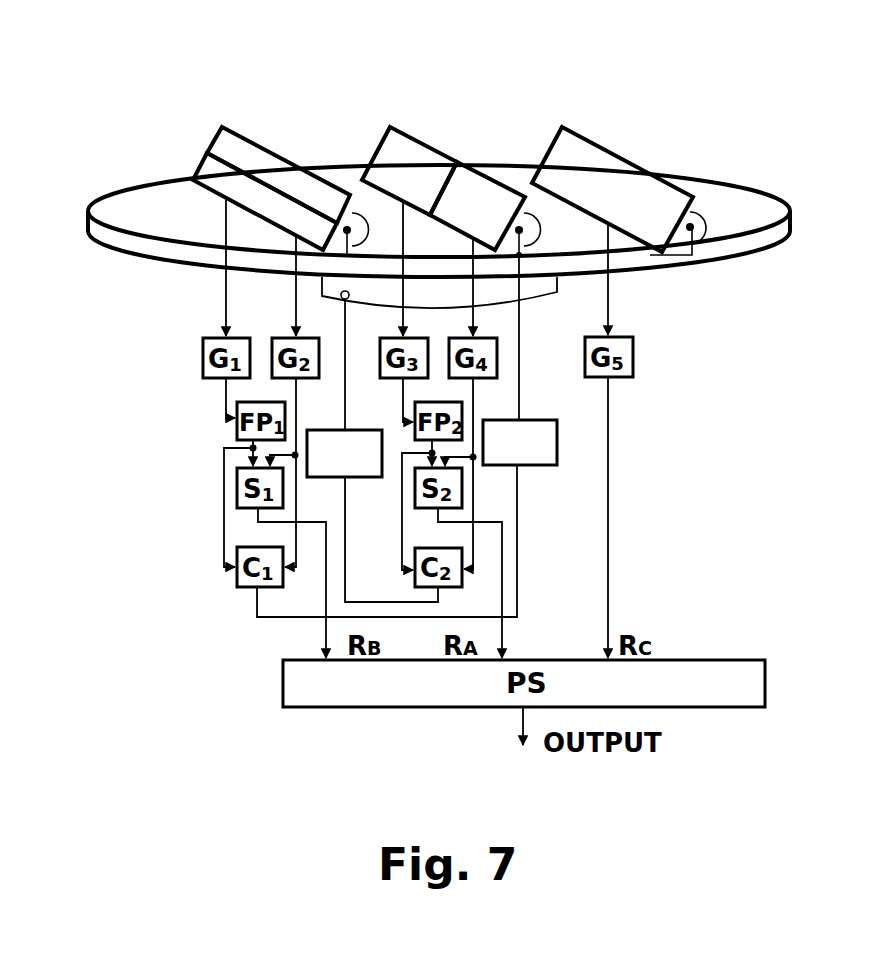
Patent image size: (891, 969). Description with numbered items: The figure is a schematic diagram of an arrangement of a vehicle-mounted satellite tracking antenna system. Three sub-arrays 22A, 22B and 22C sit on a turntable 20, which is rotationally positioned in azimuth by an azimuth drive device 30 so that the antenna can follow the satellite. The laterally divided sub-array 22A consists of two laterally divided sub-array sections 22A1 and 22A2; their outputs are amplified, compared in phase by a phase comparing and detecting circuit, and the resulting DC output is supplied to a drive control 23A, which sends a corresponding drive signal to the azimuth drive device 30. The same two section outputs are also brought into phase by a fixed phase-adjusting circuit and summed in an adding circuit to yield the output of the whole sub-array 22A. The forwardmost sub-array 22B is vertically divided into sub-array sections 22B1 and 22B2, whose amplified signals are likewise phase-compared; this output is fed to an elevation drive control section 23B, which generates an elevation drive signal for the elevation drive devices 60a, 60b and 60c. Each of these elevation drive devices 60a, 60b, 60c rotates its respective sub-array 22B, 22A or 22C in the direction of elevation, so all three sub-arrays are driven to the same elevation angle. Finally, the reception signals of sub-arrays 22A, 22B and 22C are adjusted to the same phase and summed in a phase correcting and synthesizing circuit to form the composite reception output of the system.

The turntable 20 is at (757, 198).
The laterally divided sub-array 22A is at (458, 169).
The sub-array section 22A1 is at (392, 142).
The sub-array section 22A2 is at (572, 226).
The vertically divided sub-array 22B is at (211, 159).
The sub-array section 22B1 is at (242, 143).
The sub-array section 22B2 is at (208, 183).
The sub-array 22C is at (600, 158).
The drive control 23A is at (360, 478).
The elevation drive control section 23B is at (538, 465).
The azimuth drive device 30 is at (542, 287).
The elevation drive device 60a is at (355, 252).
The elevation drive device 60b is at (507, 240).
The elevation drive device 60c is at (703, 247).